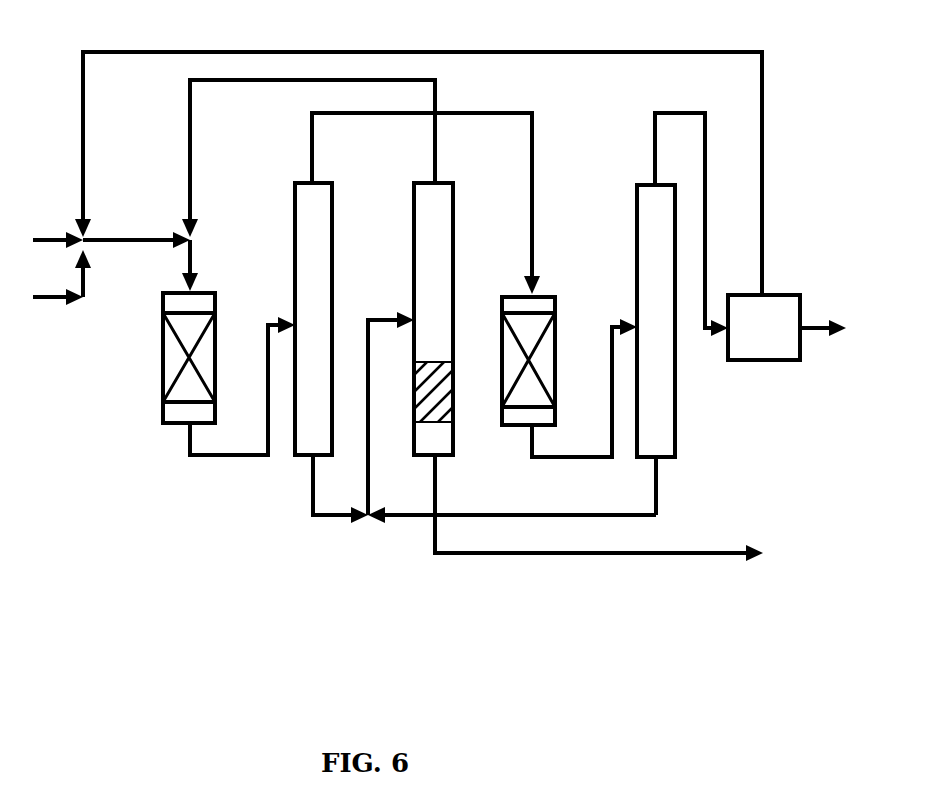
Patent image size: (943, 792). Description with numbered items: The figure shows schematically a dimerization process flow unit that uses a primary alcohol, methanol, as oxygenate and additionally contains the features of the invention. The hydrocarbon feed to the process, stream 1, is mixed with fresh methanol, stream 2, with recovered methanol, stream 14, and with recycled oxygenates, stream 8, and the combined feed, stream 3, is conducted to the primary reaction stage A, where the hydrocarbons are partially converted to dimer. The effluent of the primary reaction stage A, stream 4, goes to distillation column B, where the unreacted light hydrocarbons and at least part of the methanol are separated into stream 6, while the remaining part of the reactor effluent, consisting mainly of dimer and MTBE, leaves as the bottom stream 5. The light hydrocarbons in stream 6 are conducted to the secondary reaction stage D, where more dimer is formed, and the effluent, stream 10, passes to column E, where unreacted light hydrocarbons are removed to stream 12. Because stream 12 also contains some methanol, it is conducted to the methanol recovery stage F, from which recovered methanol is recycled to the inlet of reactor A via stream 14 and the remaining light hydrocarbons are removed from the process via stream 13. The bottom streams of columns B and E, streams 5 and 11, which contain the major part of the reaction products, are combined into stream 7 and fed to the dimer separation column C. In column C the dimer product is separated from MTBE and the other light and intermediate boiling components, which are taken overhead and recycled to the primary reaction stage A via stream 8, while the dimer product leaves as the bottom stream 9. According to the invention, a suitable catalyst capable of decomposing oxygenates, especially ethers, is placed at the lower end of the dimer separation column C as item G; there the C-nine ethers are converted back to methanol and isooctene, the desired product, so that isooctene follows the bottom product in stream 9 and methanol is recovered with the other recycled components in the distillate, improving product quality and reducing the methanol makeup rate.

The hydrocarbon feed stream 1 is at (62, 299).
The fresh methanol stream 2 is at (111, 222).
The combined feed stream 3 is at (202, 265).
The primary reaction stage effluent stream 4 is at (230, 399).
The column B bottom stream 5 is at (340, 511).
The light hydrocarbon stream 6 is at (433, 203).
The dimer separation column feed stream 7 is at (388, 399).
The recycled oxygenates stream 8 is at (300, 158).
The dimer product stream 9 is at (599, 528).
The secondary reaction stage effluent stream 10 is at (512, 501).
The column E bottom stream 11 is at (690, 486).
The light hydrocarbon overhead stream 12 is at (680, 214).
The light hydrocarbon purge stream 13 is at (823, 345).
The recovered methanol stream 14 is at (418, 158).
The primary reaction stage A is at (168, 358).
The distillation column B is at (300, 319).
The dimer separation column C is at (417, 319).
The secondary reaction stage D is at (525, 347).
The distillation column E is at (639, 321).
The methanol recovery stage F is at (764, 350).
The oxygenate decomposing catalyst G is at (408, 412).